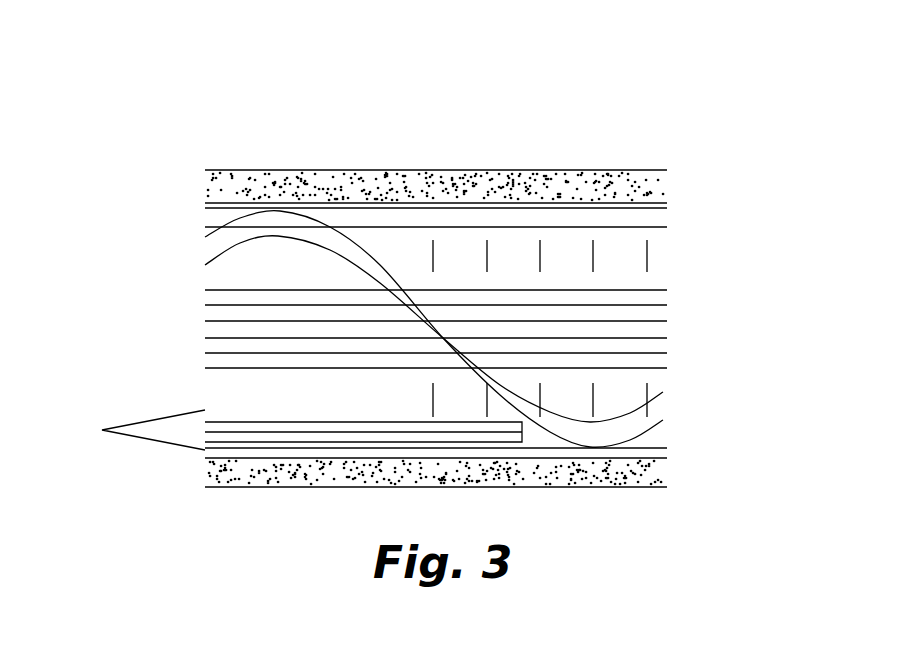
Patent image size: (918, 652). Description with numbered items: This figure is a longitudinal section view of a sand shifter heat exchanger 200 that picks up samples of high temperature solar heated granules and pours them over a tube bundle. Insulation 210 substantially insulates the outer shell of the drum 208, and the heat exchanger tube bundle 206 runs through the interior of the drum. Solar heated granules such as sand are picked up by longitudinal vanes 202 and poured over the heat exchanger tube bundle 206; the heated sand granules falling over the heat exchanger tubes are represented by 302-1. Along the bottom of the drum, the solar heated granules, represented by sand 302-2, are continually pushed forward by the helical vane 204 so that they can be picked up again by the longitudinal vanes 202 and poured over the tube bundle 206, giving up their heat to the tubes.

The heat exchanger 200 is at (781, 72).
The longitudinal vanes 202 is at (190, 210).
The helical vane 204 is at (608, 432).
The heat exchanger tube bundle 206 is at (648, 325).
The drum 208 is at (642, 207).
The insulation 210 is at (660, 172).
The heated sand granules poured over the heat exchanger tubes 302-1 is at (648, 250).
The sand 302-2 is at (410, 413).